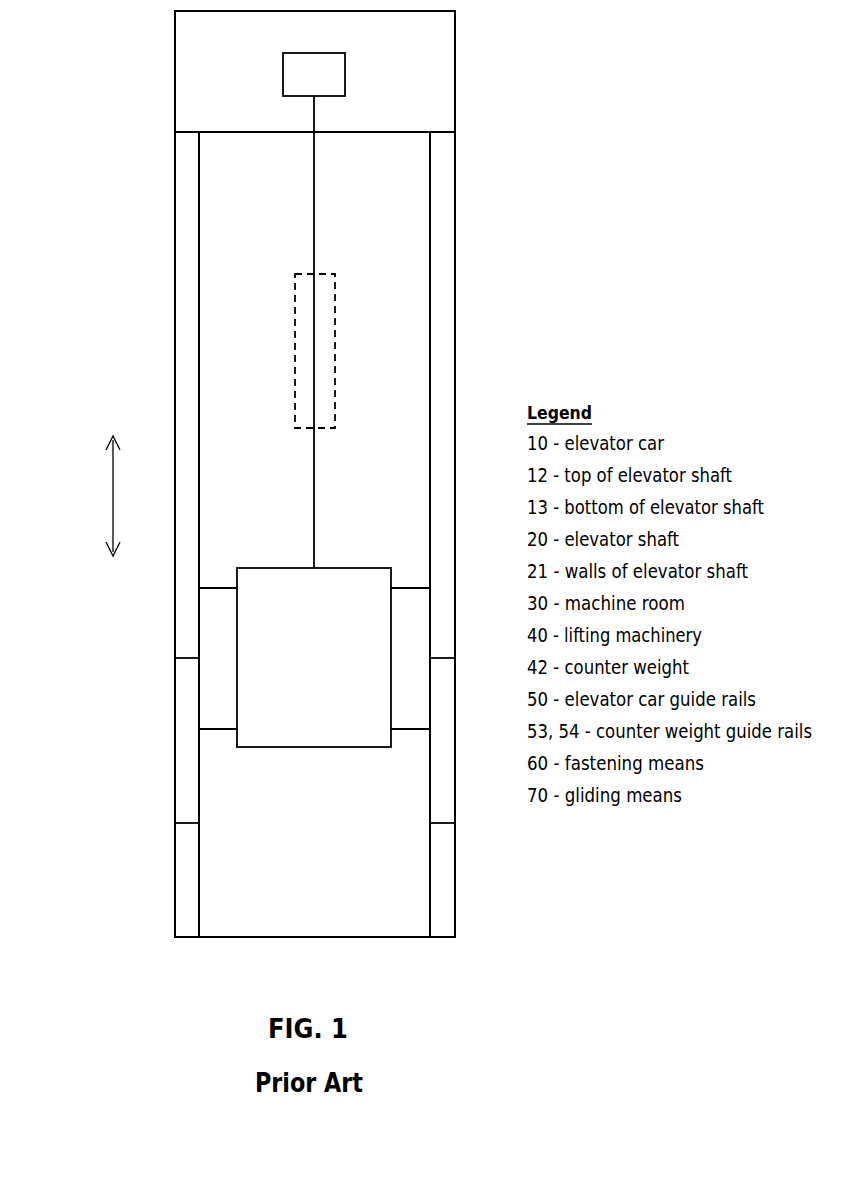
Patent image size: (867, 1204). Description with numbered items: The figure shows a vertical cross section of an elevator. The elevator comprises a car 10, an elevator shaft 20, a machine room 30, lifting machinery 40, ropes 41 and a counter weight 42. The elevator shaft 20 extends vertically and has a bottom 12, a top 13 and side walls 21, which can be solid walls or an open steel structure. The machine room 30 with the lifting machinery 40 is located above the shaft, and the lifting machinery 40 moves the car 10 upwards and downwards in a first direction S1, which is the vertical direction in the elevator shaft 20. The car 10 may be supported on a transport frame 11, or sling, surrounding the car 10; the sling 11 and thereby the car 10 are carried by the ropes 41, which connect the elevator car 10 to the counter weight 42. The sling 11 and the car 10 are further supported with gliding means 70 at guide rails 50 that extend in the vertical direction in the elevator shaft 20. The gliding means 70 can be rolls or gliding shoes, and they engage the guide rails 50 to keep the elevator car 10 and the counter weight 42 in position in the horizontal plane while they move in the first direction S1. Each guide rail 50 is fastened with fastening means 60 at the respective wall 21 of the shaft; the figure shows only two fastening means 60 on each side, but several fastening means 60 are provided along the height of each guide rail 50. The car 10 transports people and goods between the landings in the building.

The car 10 is at (301, 652).
The transport frame 11 is at (318, 750).
The bottom 12 is at (313, 935).
The top 13 is at (248, 134).
The elevator shaft 20 is at (375, 367).
The side walls 21 is at (175, 308).
The machine room 30 is at (397, 50).
The lifting machinery 40 is at (303, 87).
The ropes 41 is at (316, 199).
The counter weight 42 is at (303, 350).
The guide rails 50 is at (199, 468).
The fastening means 60 is at (192, 660).
The gliding means 70 is at (218, 585).
The first direction S1 is at (113, 500).